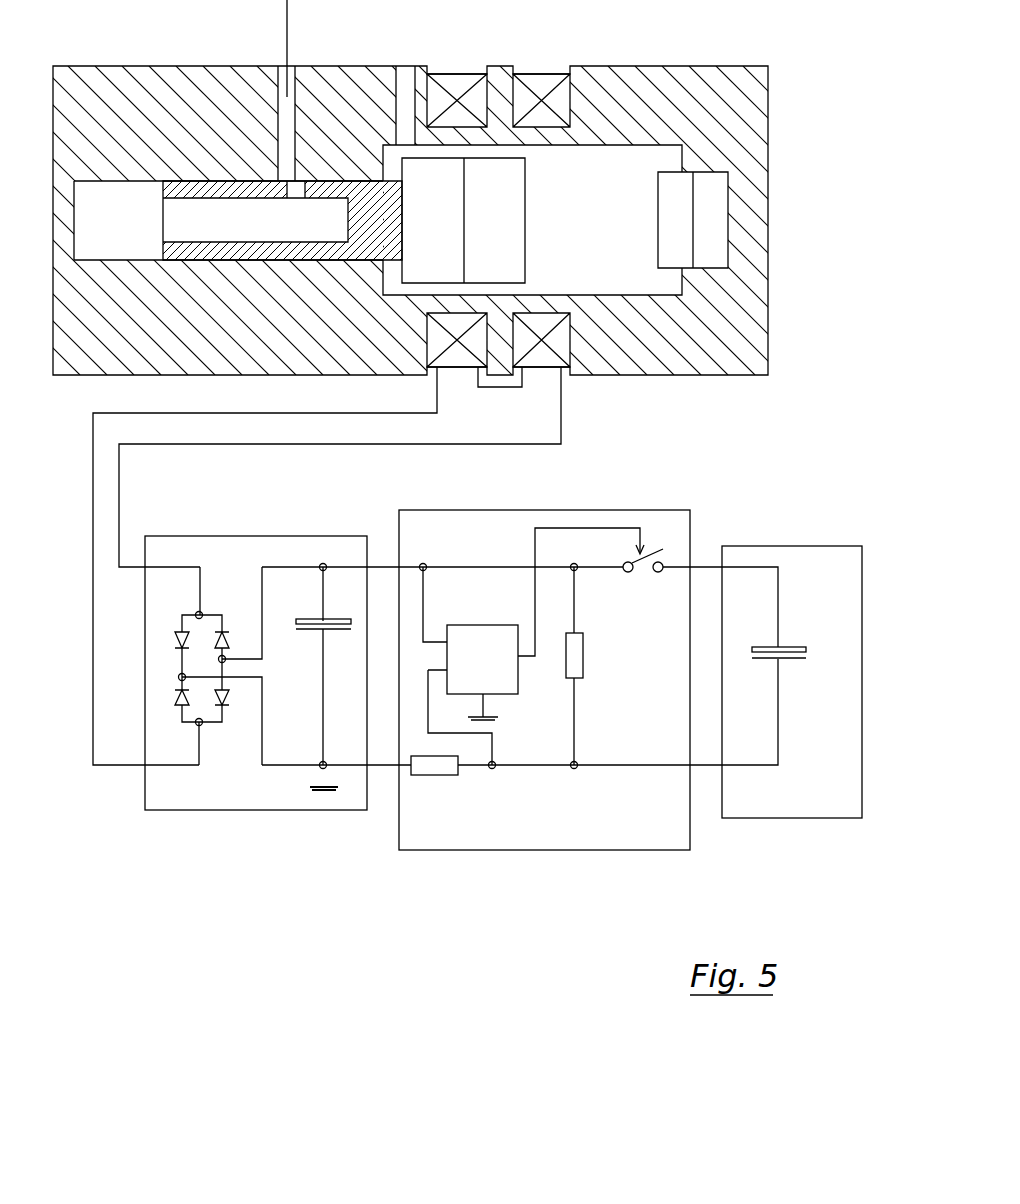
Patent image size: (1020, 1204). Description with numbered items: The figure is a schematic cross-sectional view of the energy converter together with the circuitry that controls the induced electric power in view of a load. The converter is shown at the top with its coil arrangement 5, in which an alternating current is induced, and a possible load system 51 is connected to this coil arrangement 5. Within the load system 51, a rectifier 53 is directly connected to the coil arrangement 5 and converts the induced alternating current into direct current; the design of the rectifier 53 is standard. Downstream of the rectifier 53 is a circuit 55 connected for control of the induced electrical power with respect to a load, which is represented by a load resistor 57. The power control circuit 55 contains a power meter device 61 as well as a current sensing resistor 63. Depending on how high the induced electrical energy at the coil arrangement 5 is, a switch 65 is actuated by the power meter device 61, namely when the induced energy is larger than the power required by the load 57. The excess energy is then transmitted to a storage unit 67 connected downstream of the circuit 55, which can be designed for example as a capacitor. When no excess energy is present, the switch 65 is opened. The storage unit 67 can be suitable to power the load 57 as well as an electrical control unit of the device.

The coil arrangement 5 is at (540, 68).
The load system 51 is at (402, 890).
The rectifier 53 is at (208, 812).
The circuit 55 is at (535, 852).
The load resistor 57 is at (575, 650).
The power meter device 61 is at (533, 646).
The current sensing resistor 63 is at (436, 772).
The switch 65 is at (646, 546).
The storage unit 67 is at (770, 820).